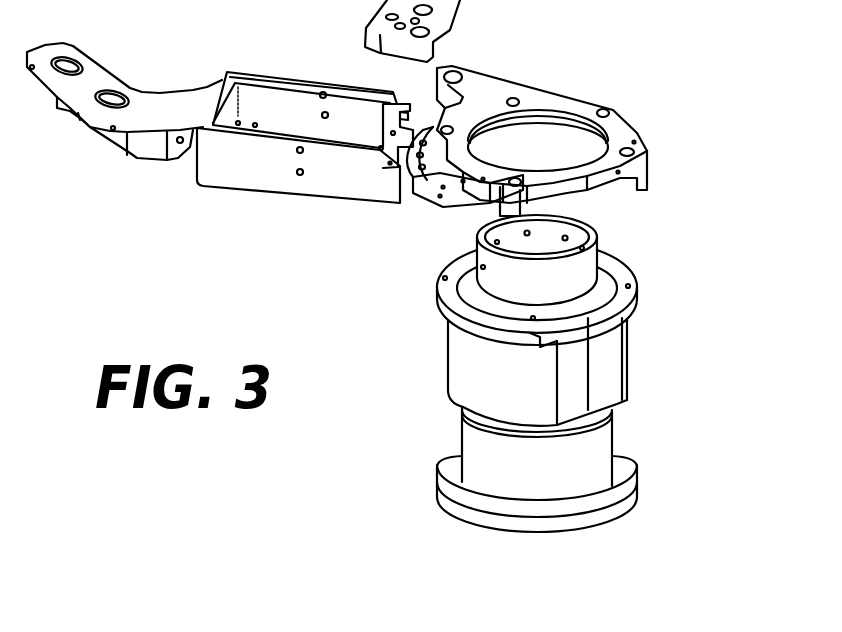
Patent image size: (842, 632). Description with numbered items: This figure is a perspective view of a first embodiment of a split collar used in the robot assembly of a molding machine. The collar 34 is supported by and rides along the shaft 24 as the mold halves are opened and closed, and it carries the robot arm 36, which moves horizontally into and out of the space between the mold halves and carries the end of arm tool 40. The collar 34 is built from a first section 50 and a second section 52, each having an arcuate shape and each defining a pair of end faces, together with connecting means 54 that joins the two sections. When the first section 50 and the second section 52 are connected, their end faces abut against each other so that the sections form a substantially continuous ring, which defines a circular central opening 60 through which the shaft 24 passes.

The shaft 24 is at (473, 442).
The collar 34 is at (562, 140).
The arm 36 is at (297, 198).
The end of arm tool 40 is at (97, 80).
The first section 50 is at (562, 107).
The second section 52 is at (597, 182).
The connecting means 54 is at (658, 127).
The central opening 60 is at (518, 160).